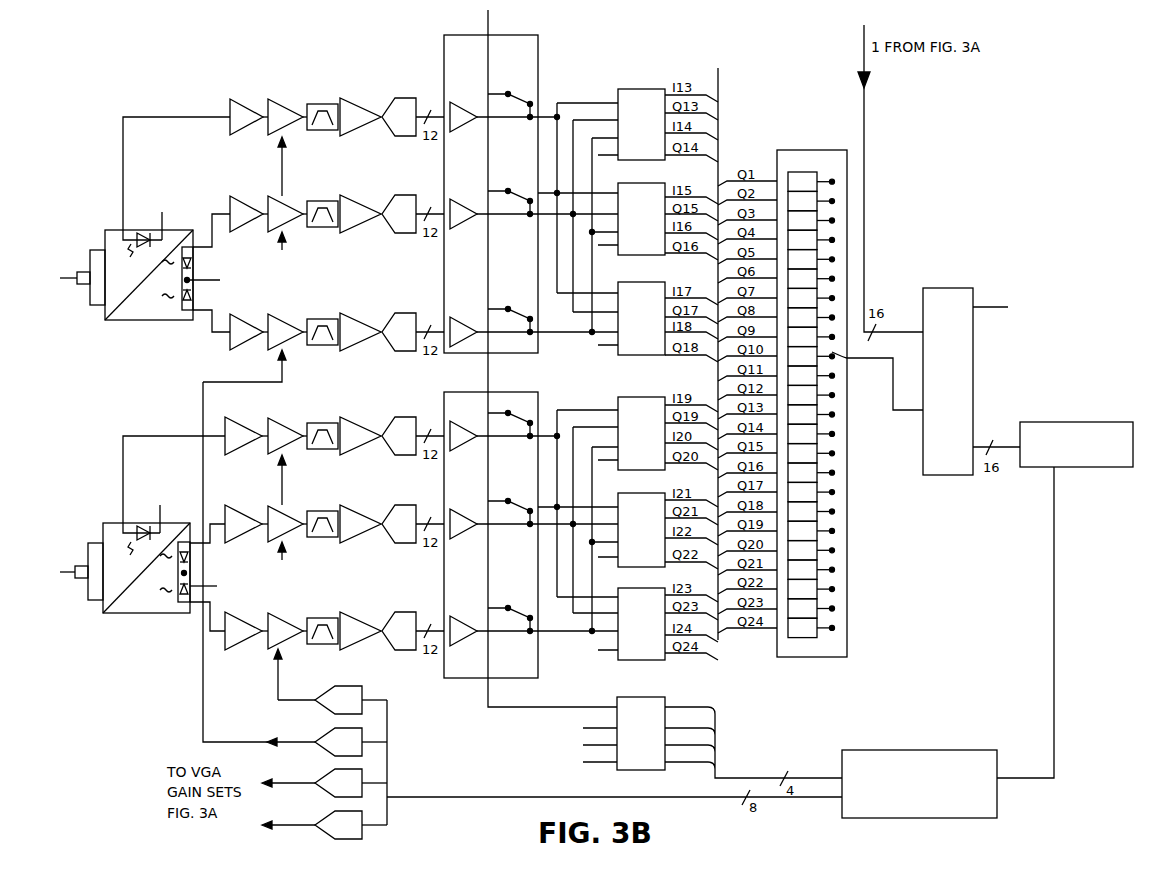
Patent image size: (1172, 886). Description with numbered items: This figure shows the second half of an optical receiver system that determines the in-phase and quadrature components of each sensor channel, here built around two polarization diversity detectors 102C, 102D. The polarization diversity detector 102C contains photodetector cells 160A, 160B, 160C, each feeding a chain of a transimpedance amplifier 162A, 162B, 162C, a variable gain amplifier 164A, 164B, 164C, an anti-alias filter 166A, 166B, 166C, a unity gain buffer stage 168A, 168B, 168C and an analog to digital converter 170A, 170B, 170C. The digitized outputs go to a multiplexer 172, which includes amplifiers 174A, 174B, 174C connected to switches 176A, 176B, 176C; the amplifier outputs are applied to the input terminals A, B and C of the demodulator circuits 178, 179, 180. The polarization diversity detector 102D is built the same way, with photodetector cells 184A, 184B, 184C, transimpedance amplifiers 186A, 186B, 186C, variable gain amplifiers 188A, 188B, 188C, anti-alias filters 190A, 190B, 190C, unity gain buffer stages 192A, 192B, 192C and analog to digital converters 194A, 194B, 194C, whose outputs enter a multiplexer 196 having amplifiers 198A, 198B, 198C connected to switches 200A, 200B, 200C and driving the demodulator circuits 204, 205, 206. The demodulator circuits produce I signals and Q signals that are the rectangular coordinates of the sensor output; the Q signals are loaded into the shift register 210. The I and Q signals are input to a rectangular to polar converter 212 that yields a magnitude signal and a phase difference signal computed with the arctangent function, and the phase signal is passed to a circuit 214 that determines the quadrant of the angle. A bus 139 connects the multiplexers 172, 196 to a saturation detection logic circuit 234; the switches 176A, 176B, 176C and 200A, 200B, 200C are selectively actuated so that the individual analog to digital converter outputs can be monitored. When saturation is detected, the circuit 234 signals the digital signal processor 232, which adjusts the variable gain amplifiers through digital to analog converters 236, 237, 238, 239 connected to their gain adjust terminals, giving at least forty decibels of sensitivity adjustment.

The polarization diversity detector 102C is at (122, 322).
The polarization diversity detector 102D is at (120, 615).
The bus 139 is at (513, 708).
The photodetector cell 160A is at (148, 218).
The photodetector cell 160B is at (214, 259).
The photodetector cell 160C is at (172, 312).
The transimpedance amplifier 162A is at (232, 106).
The transimpedance amplifier 162B is at (232, 204).
The transimpedance amplifier 162C is at (230, 342).
The variable gain amplifier 164A is at (270, 130).
The variable gain amplifier 164B is at (270, 197).
The variable gain amplifier 164C is at (270, 350).
The anti-alias filter 166A is at (308, 103).
The anti-alias filter 166B is at (312, 201).
The anti-alias filter 166C is at (325, 308).
The unity gain buffer stage 168A is at (344, 135).
The unity gain buffer stage 168B is at (348, 238).
The unity gain buffer stage 168C is at (350, 352).
The analog to digital converter 170A is at (390, 101).
The analog to digital converter 170B is at (392, 196).
The analog to digital converter 170C is at (392, 315).
The multiplexer 172 is at (538, 60).
The amplifier 174A is at (466, 133).
The amplifier 174B is at (466, 230).
The amplifier 174C is at (472, 317).
The switch 176A is at (508, 82).
The switch 176B is at (508, 177).
The switch 176C is at (508, 295).
The demodulator circuit 178 is at (648, 89).
The demodulator circuit 179 is at (648, 183).
The demodulator circuit 180 is at (648, 282).
The photodetector cell 184A is at (148, 518).
The photodetector cell 184B is at (216, 570).
The photodetector cell 184C is at (170, 610).
The transimpedance amplifier 186A is at (250, 408).
The transimpedance amplifier 186B is at (238, 506).
The transimpedance amplifier 186C is at (245, 605).
The variable gain amplifier 188A is at (283, 418).
The variable gain amplifier 188B is at (289, 543).
The variable gain amplifier 188C is at (270, 645).
The anti-alias filter 190A is at (318, 449).
The anti-alias filter 190B is at (312, 511).
The anti-alias filter 190C is at (318, 605).
The unity gain buffer stage 192A is at (355, 418).
The unity gain buffer stage 192B is at (355, 544).
The unity gain buffer stage 192C is at (356, 612).
The analog to digital converter 194A is at (385, 456).
The analog to digital converter 194B is at (392, 505).
The analog to digital converter 194C is at (390, 650).
The multiplexer 196 is at (538, 398).
The amplifier 198A is at (466, 452).
The amplifier 198B is at (466, 540).
The amplifier 198C is at (468, 615).
The switch 200A is at (508, 399).
The switch 200B is at (508, 487).
The switch 200C is at (508, 594).
The demodulator circuit 204 is at (648, 397).
The demodulator circuit 205 is at (648, 493).
The demodulator circuit 206 is at (648, 588).
The shift register 210 is at (817, 150).
The rectangular to polar converter 212 is at (948, 288).
The quadrant determining circuit 214 is at (1082, 422).
The digital signal processor 232 is at (898, 750).
The saturation detection logic circuit 234 is at (617, 703).
The digital to analog converter 236 is at (330, 818).
The digital to analog converter 237 is at (364, 774).
The digital to analog converter 238 is at (364, 732).
The digital to analog converter 239 is at (330, 712).